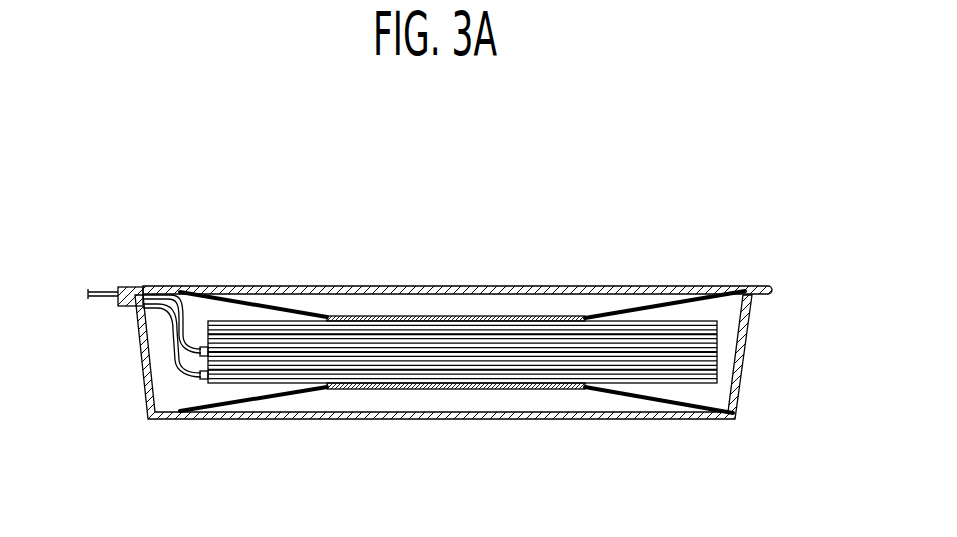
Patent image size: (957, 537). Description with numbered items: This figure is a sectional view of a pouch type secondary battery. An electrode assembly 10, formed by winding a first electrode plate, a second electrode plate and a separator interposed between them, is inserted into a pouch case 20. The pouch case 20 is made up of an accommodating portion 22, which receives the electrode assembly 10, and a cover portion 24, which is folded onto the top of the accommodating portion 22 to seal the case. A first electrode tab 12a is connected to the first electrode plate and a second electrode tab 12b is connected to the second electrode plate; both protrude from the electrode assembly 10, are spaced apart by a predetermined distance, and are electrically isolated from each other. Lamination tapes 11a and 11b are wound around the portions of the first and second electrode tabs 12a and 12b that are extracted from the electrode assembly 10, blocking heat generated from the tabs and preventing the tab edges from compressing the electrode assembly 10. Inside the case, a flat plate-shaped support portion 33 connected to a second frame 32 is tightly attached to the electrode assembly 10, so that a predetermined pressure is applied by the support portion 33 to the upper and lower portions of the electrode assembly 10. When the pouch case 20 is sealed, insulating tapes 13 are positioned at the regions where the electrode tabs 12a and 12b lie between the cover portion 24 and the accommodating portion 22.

The electrode assembly 10 is at (628, 337).
The lamination tape 11a is at (208, 325).
The lamination tape 11b is at (204, 381).
The first electrode tab 12a is at (172, 285).
The second electrode tab 12b is at (186, 355).
The insulating tape 13 is at (130, 285).
The pouch case 20 is at (511, 338).
The accommodating portion 22 is at (488, 357).
The cover portion 24 is at (744, 292).
The second frame 32 is at (277, 307).
The support portion 33 is at (462, 315).